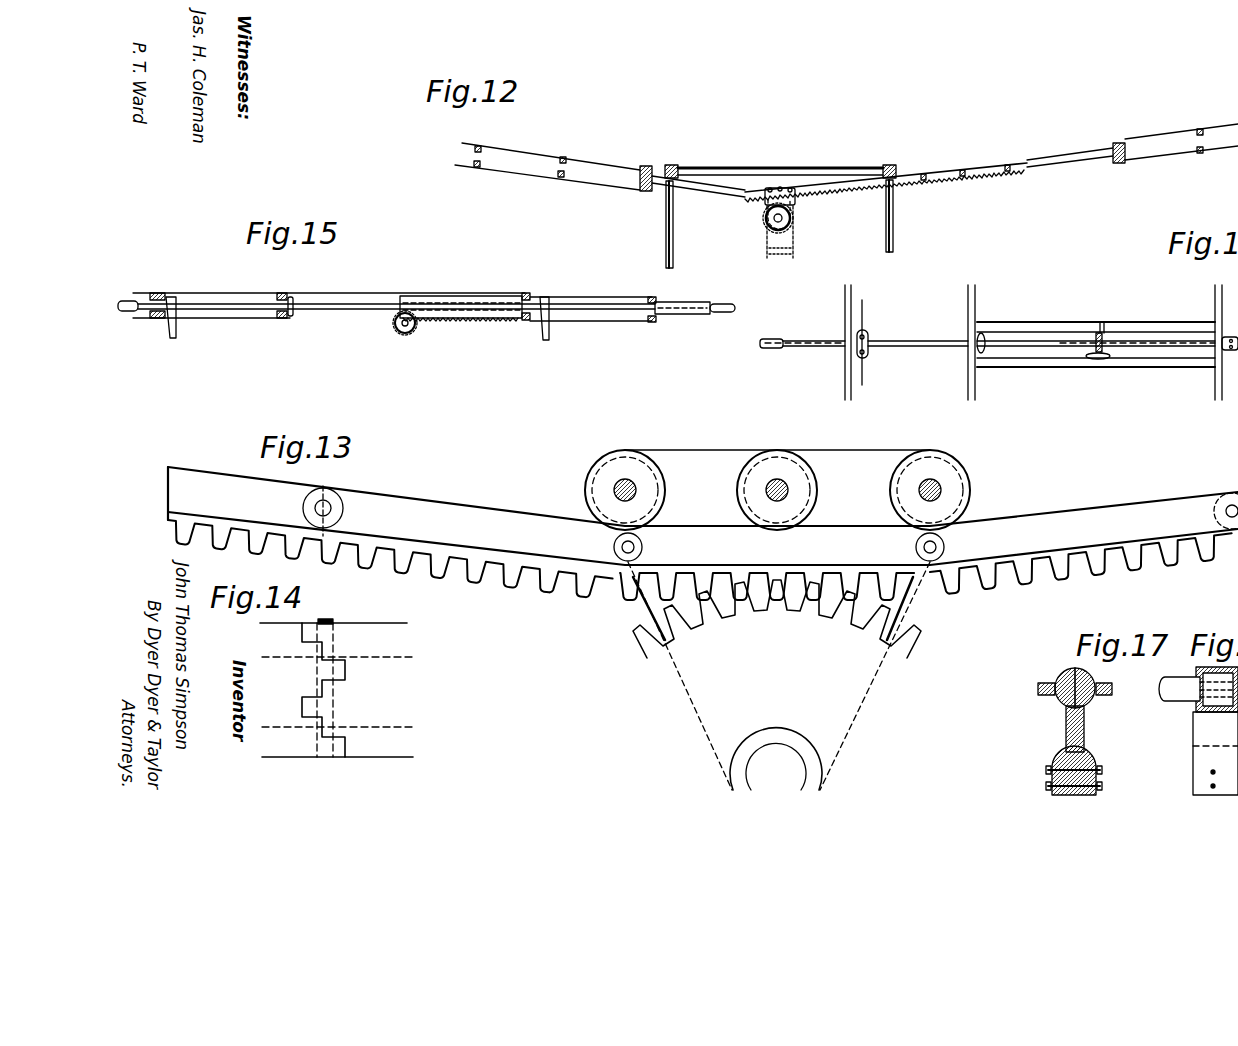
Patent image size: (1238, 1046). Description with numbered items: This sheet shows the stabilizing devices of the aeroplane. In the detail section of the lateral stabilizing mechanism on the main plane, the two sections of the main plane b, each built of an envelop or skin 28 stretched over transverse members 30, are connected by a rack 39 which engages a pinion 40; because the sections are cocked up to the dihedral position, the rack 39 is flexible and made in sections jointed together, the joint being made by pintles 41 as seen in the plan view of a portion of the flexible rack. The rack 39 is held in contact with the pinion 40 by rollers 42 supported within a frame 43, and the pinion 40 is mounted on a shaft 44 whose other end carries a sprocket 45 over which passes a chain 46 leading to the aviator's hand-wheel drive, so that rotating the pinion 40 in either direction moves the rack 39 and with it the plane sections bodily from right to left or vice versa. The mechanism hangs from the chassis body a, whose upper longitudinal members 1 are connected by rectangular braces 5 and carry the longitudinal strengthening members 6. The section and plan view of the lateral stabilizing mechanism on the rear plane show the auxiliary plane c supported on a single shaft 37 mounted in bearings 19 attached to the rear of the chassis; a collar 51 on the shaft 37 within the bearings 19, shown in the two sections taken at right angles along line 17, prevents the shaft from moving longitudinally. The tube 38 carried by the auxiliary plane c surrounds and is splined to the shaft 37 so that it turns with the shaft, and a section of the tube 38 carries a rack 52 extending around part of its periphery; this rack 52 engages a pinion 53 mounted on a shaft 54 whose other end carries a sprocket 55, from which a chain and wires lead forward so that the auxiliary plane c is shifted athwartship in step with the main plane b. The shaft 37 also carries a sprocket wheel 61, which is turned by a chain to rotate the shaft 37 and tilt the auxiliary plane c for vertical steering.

In FIG. 12, the upper longitudinal member 1 is at (684, 161).
In FIG. 12, the rectangular brace 5 is at (752, 162).
In FIG. 12, the longitudinal strengthening member 6 is at (676, 236).
In FIG. 16, the section line 17— 17 is at (1033, 341).
In FIG. 15, the bearing 19 is at (170, 330).
In FIG. 16, the bearing 19 is at (902, 320).
In FIG. 17, the bearing 19 is at (1104, 735).
In FIG. 17A, the bearing 19 is at (1215, 753).
In FIG. 12, the envelop or skin 28 is at (535, 170).
In FIG. 12, the transverse member 30 is at (568, 160).
In FIG. 15, the shaft 37 is at (330, 312).
In FIG. 16, the shaft 37 is at (920, 340).
In FIG. 15, the tube 38 is at (468, 306).
In FIG. 12, the rack 39 is at (960, 172).
In FIG. 13, the rack 39 is at (701, 538).
In FIG. 12, the pinion 40 is at (766, 222).
In FIG. 13, the pinion 40 is at (790, 636).
In FIG. 12, the pintle 41 is at (930, 165).
In FIG. 13, the pintle 41 is at (332, 504).
In FIG. 14, the pintle 41 is at (360, 606).
In FIG. 12, the roller 42 is at (796, 192).
In FIG. 13, the roller 42 is at (928, 443).
In FIG. 12, the frame 43 is at (800, 206).
In FIG. 13, the frame 43 is at (777, 474).
In FIG. 12, the shaft 44 is at (767, 232).
In FIG. 13, the shaft 44 is at (786, 775).
In FIG. 12, the sprocket 45 is at (794, 226).
In FIG. 12, the chain 46 is at (782, 256).
In FIG. 17, the collar 51 is at (1066, 698).
In FIG. 17A, the collar 51 is at (1200, 705).
In FIG. 15, the rack 52 is at (462, 320).
In FIG. 15, the pinion 53 is at (410, 330).
In FIG. 16, the pinion 53 is at (1098, 332).
In FIG. 15, the shaft 54 is at (403, 328).
In FIG. 16, the sprocket 55 is at (1097, 360).
In FIG. 15, the sprocket wheel 61 is at (291, 320).
In FIG. 16, the sprocket wheel 61 is at (985, 352).
In FIG. 17, the body a is at (1108, 797).
In FIG. 12, the main plane b is at (846, 153).
In FIG. 15, the auxiliary plane c is at (546, 282).
In FIG. 16, the auxiliary plane c is at (1096, 333).